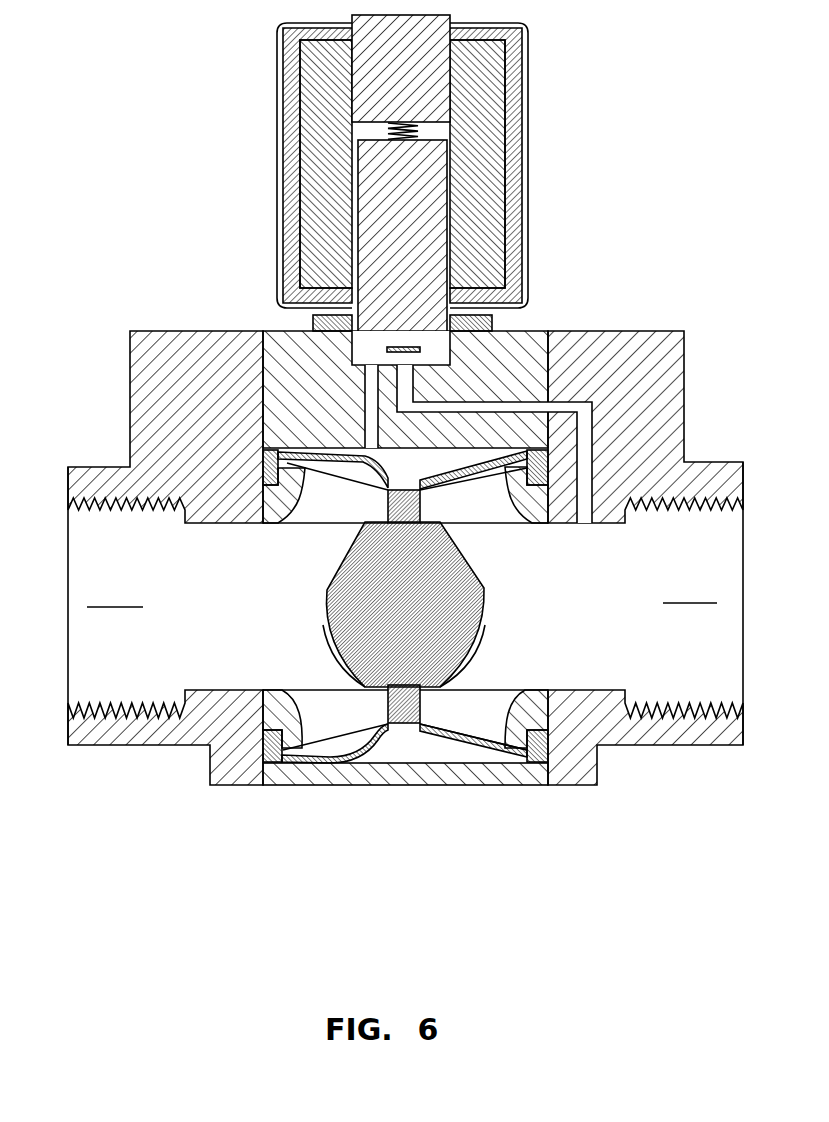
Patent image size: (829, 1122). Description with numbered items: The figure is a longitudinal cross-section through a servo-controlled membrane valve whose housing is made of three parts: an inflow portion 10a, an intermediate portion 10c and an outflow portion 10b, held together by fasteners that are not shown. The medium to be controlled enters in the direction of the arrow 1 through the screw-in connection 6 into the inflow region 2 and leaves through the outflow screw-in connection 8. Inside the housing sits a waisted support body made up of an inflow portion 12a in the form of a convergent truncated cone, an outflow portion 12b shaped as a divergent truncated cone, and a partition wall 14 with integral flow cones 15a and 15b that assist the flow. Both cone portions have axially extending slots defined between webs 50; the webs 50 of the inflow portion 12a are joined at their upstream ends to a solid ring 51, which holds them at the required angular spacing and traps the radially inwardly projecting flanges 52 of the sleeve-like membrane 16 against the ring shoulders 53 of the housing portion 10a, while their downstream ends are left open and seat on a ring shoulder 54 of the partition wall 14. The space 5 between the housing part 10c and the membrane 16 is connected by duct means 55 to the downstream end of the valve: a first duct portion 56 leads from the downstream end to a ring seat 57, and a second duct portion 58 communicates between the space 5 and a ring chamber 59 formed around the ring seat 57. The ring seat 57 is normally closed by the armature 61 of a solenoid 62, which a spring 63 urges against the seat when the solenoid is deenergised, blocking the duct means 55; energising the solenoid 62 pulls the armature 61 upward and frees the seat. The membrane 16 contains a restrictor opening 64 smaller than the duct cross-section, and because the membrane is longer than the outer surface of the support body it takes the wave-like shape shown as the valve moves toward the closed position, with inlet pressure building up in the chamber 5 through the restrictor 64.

The arrow 1 is at (130, 607).
The inflow region 2 is at (688, 603).
The control chamber 5 is at (408, 750).
The screw-in connection 6 is at (102, 743).
The outflow screw-in connection 8 is at (703, 742).
The inflow portion 10a is at (145, 745).
The outflow portion 10b is at (627, 743).
The intermediate portion 10c is at (452, 770).
The inflow portion 12a is at (315, 512).
The outflow portion 12b is at (520, 515).
The partition wall 14 is at (483, 602).
The flow cone 15a is at (333, 645).
The flow cone 15b is at (470, 645).
The sleeve-like membrane 16 is at (362, 753).
The webs 50 is at (358, 503).
The solid ring 51 is at (277, 513).
The radially inwardly projecting flanges 52 is at (268, 458).
The ring shoulders 53 is at (263, 503).
The ring shoulder 54 is at (325, 597).
The duct means 55 is at (350, 358).
The first duct portion 56 is at (565, 397).
The ring seat 57 is at (457, 345).
The second duct portion 58 is at (367, 403).
The ring chamber 59 is at (293, 330).
The armature 61 is at (445, 202).
The solenoid 62 is at (527, 142).
The spring 63 is at (420, 133).
The restrictor opening 64 is at (398, 474).